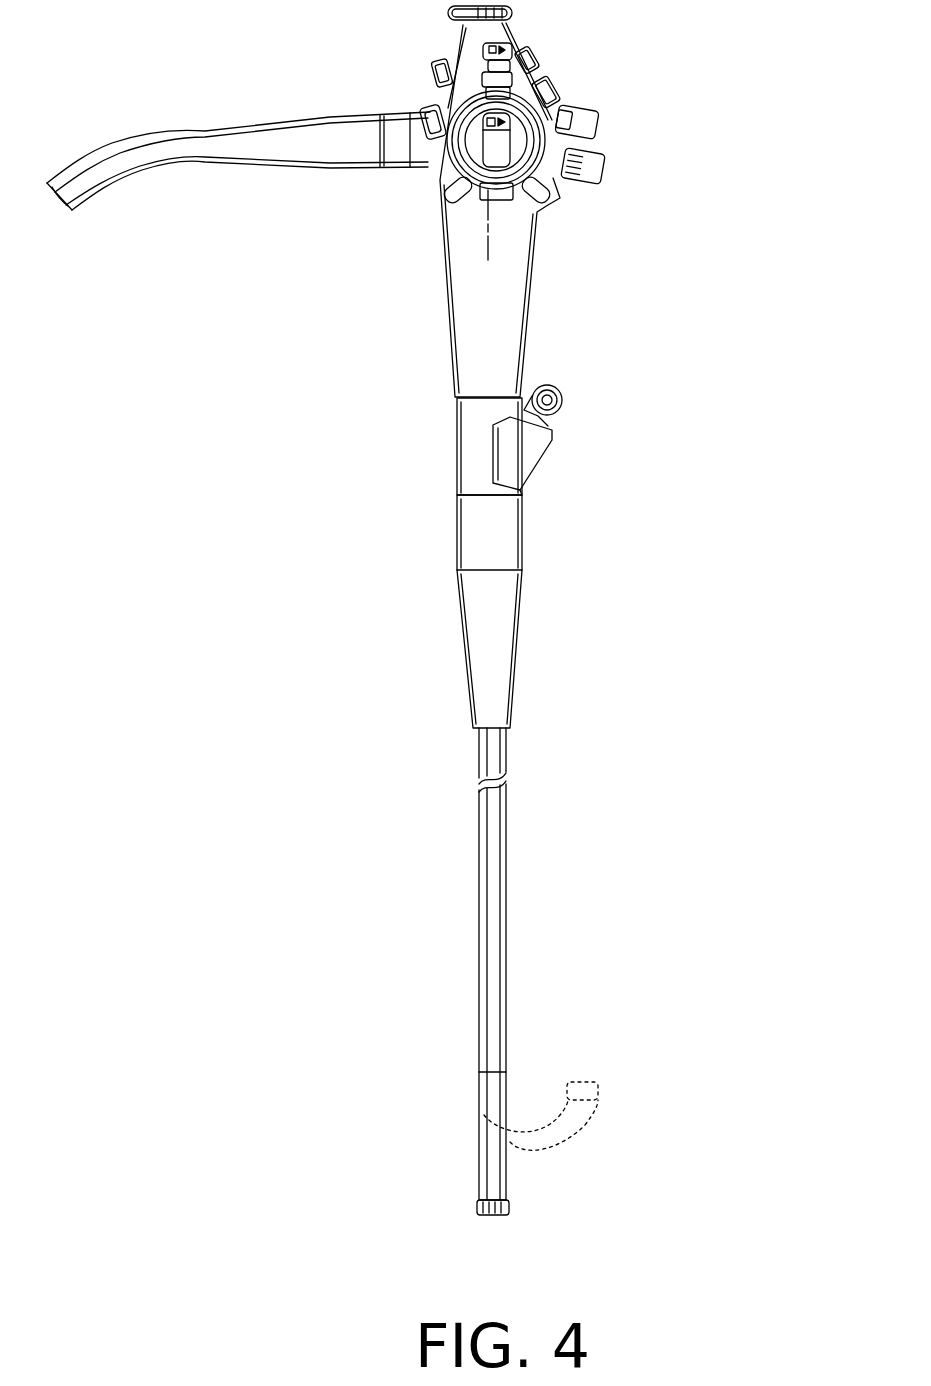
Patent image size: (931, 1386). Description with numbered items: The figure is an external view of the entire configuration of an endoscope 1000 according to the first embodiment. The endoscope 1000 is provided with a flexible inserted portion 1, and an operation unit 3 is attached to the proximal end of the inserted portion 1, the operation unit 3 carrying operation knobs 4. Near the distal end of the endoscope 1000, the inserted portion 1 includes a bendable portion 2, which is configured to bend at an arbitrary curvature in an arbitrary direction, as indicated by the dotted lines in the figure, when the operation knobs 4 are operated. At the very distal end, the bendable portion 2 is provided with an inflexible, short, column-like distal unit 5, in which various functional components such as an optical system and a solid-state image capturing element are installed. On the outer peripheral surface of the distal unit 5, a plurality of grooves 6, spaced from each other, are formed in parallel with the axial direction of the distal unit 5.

The endoscope 1000 is at (737, 525).
The inserted portion 1 is at (513, 997).
The bendable portion 2 is at (480, 1132).
The operation unit 3 is at (441, 329).
The operation knobs 4 is at (450, 170).
The distal unit 5 is at (478, 1207).
The grooves 6 is at (510, 1208).